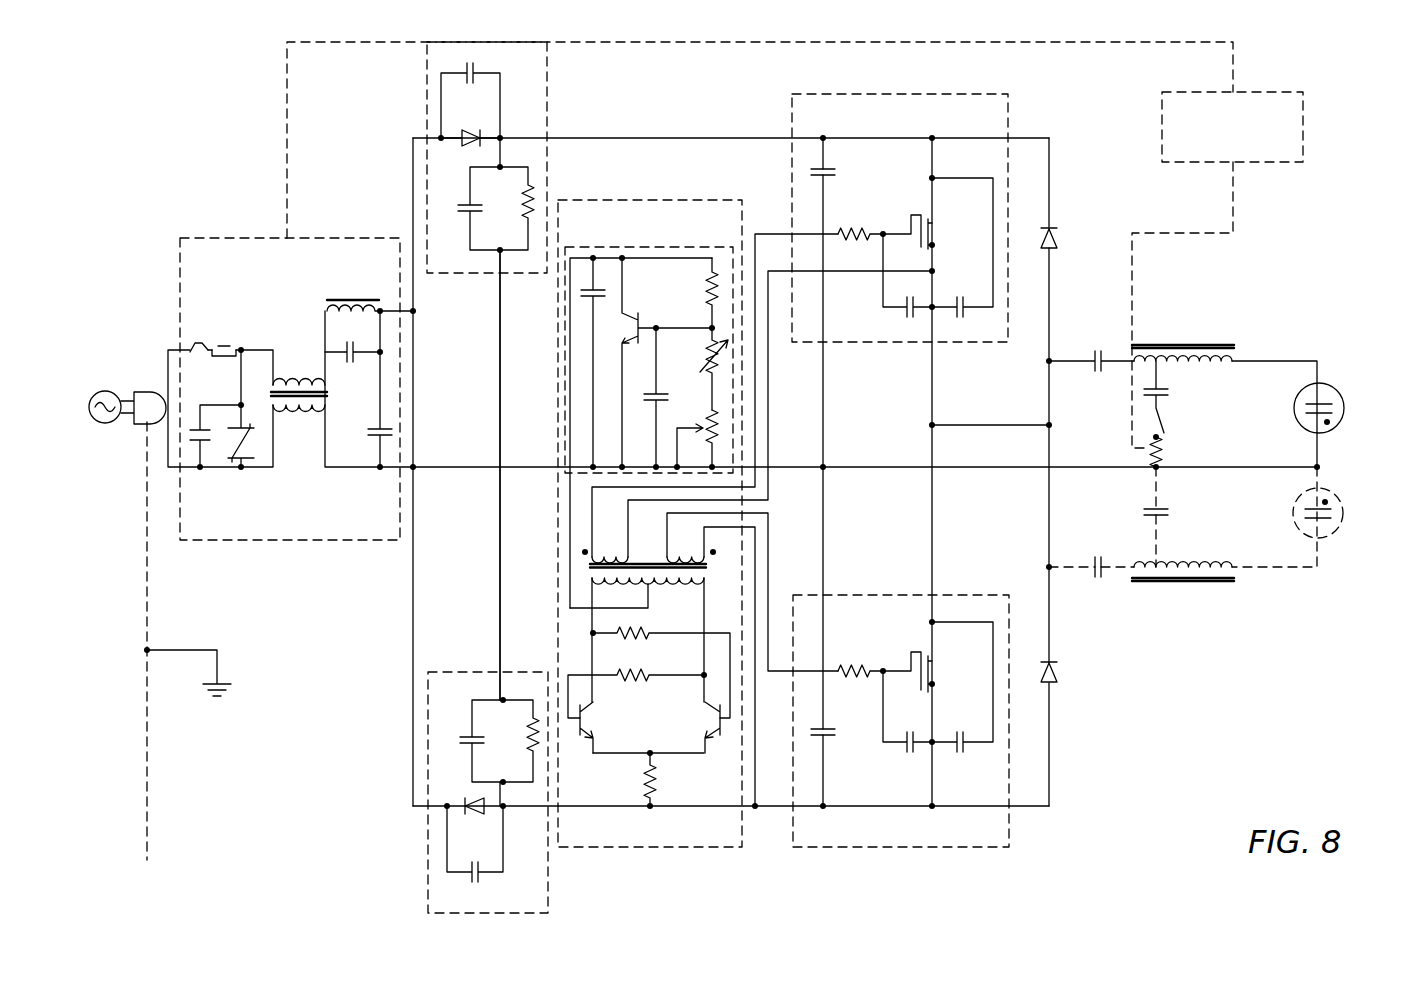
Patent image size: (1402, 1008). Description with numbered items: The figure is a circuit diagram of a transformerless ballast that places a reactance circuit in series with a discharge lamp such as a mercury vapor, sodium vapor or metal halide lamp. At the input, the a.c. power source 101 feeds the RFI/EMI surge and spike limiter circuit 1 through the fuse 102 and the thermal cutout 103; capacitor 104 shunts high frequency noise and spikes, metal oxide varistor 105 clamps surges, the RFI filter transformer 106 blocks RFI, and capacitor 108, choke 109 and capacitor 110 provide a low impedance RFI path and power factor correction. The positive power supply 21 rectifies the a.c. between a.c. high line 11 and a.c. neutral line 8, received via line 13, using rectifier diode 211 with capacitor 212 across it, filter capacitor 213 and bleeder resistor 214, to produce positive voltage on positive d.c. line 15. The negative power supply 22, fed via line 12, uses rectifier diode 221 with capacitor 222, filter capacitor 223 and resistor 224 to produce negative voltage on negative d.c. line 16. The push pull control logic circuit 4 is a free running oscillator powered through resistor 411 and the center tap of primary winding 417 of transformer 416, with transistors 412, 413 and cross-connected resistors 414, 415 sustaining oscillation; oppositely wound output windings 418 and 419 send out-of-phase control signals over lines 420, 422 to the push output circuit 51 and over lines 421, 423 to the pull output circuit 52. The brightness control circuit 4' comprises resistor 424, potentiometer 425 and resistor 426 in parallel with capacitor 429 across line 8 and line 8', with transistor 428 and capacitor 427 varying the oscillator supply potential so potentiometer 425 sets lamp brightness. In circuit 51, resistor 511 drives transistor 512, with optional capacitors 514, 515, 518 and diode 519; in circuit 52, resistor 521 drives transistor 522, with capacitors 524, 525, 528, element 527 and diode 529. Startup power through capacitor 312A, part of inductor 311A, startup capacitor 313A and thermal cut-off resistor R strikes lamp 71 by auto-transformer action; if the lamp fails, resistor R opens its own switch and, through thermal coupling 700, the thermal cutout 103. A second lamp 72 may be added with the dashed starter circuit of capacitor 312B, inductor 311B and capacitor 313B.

The RFI/EMI surge and spike limiter circuit 1 is at (250, 238).
The a.c. power source 101 is at (95, 392).
The fuse 102 is at (200, 343).
The thermal cutout 103 is at (226, 346).
The capacitor 104 is at (208, 462).
The metal oxide varistor 105 is at (256, 462).
The RFI filter transformer 106 is at (298, 378).
The capacitor 108 is at (376, 426).
The choke 109 is at (350, 298).
The capacitor 110 is at (354, 362).
The a.c. high line 11 is at (413, 297).
The line 12 is at (413, 358).
The line 13 is at (500, 330).
The a.c. neutral line 8 is at (848, 488).
The positive d.c. line 15 is at (603, 137).
The negative d.c. line 16 is at (585, 808).
The positive power supply 21 is at (427, 82).
The rectifier diode 211 is at (470, 128).
The capacitor 212 is at (478, 68).
The capacitor 213 is at (464, 204).
The resistor 214 is at (522, 215).
The negative power supply 22 is at (428, 852).
The rectifier diode 221 is at (466, 800).
The capacitor 222 is at (480, 878).
The capacitor 223 is at (466, 736).
The resistor 224 is at (526, 748).
The push pull control logic circuit 4 is at (720, 523).
The brightness control circuit 4' is at (692, 408).
The line 8' is at (692, 408).
The resistor 411 is at (656, 778).
The transistor 412 is at (585, 724).
The transistor 413 is at (717, 730).
The resistor 414 is at (638, 678).
The resistor 415 is at (640, 637).
The transformer 416 is at (704, 568).
The primary winding 417 is at (680, 580).
The output winding 418 is at (596, 548).
The output winding 419 is at (676, 545).
The line 420 is at (757, 442).
The line 421 is at (770, 524).
The line 422 is at (770, 490).
The line 423 is at (757, 550).
The resistor 424 is at (714, 428).
The potentiometer 425 is at (720, 350).
The resistor 426 is at (706, 276).
The capacitor 427 is at (660, 392).
The transistor 428 is at (642, 318).
The capacitor 429 is at (600, 280).
The push output circuit 51 is at (998, 94).
The resistor 511 is at (858, 226).
The transistor 512 is at (934, 236).
The capacitor 514 is at (832, 166).
The capacitor 515 is at (906, 312).
The capacitor 518 is at (964, 296).
The diode 519 is at (1058, 240).
The pull output circuit 52 is at (1009, 838).
The resistor 521 is at (856, 664).
The transistor 522 is at (934, 678).
The capacitor 524 is at (828, 736).
The capacitor 525 is at (906, 754).
The connection 527 is at (993, 725).
The capacitor 528 is at (966, 753).
The diode 529 is at (1060, 670).
The inductor 311A is at (1198, 343).
The inductor 311B is at (1186, 588).
The capacitor 312A is at (1102, 352).
The capacitor 312B is at (1104, 580).
The startup capacitor 313A is at (1170, 386).
The capacitor 313B is at (1166, 513).
The thermal cut-off resistor R is at (1165, 450).
The lamp 71 is at (1340, 395).
The lamp 72 is at (1338, 502).
The thermal coupling 700 is at (1303, 128).